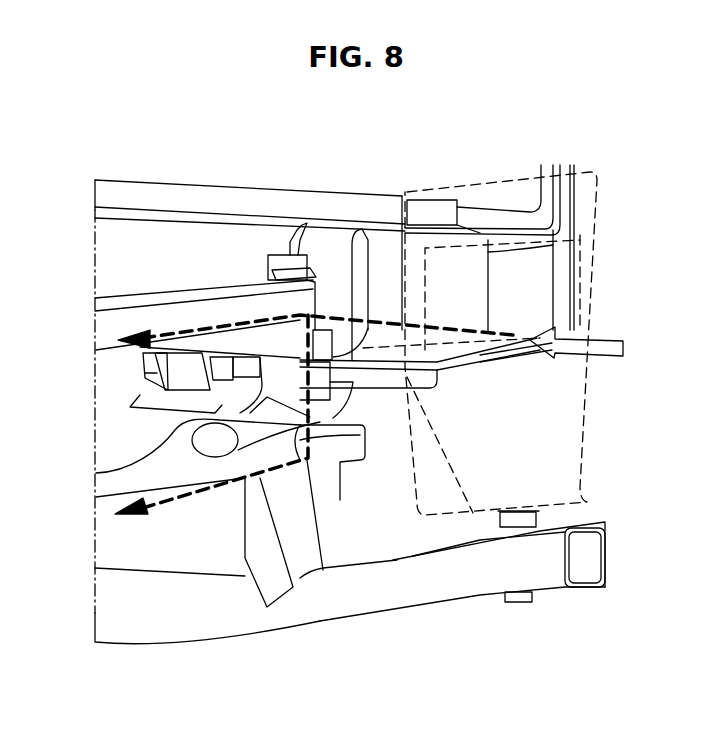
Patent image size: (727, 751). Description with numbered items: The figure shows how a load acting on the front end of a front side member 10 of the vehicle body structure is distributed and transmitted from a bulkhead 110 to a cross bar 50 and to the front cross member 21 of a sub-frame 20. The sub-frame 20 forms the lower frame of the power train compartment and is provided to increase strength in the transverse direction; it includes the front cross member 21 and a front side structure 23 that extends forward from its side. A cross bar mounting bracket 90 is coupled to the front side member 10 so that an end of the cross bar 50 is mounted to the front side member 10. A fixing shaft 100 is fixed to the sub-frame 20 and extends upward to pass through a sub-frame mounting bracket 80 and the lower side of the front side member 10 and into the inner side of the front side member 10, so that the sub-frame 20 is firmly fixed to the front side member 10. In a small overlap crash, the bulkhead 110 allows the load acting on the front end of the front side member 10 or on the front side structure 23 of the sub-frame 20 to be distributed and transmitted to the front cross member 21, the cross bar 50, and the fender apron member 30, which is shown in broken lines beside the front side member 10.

The front side member 10 is at (307, 203).
The sub-frame 20 is at (178, 649).
The front cross member 21 is at (147, 560).
The front side structure 23 is at (500, 572).
The fender apron member 30 is at (588, 275).
The cross bar 50 is at (108, 323).
The sub-frame mounting bracket 80 is at (293, 378).
The cross bar mounting bracket 90 is at (282, 268).
The fixing shaft 100 is at (328, 468).
The bulkhead 110 is at (343, 250).